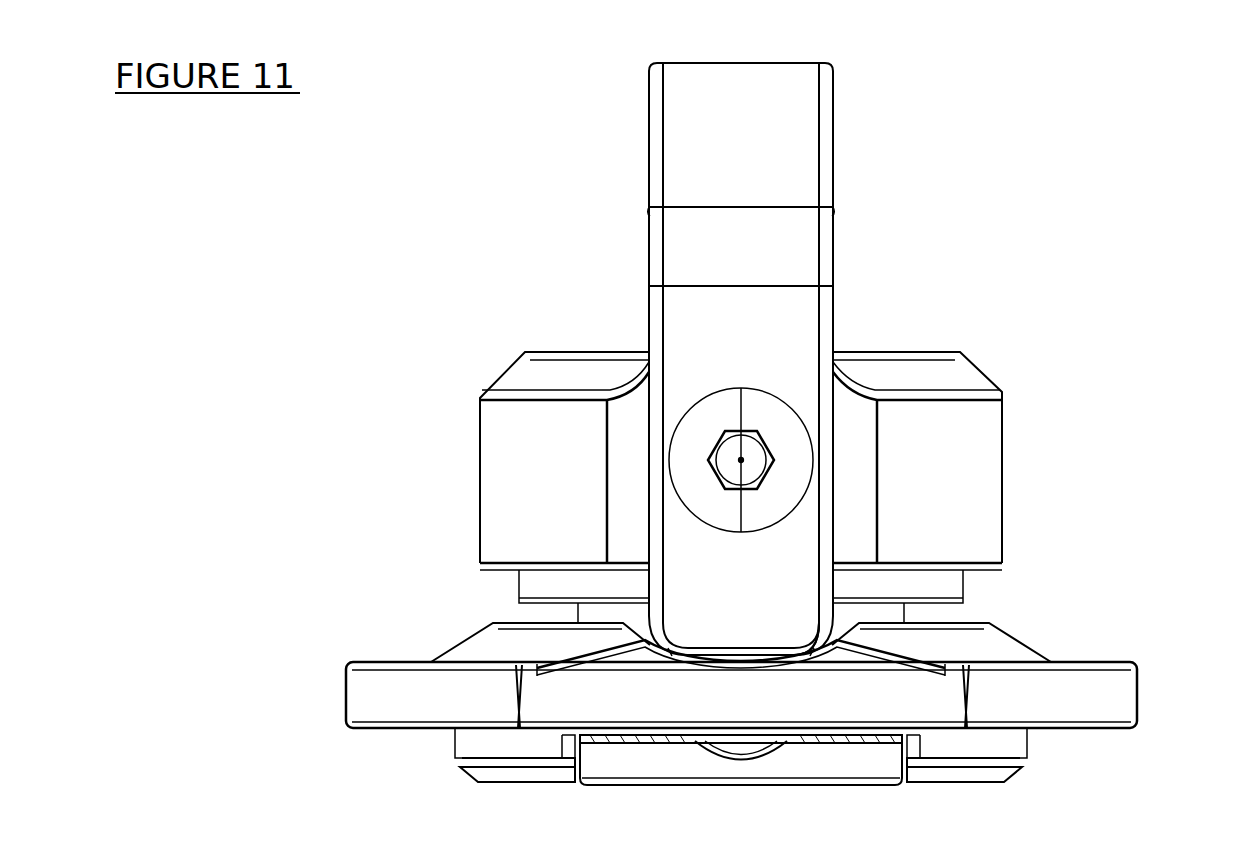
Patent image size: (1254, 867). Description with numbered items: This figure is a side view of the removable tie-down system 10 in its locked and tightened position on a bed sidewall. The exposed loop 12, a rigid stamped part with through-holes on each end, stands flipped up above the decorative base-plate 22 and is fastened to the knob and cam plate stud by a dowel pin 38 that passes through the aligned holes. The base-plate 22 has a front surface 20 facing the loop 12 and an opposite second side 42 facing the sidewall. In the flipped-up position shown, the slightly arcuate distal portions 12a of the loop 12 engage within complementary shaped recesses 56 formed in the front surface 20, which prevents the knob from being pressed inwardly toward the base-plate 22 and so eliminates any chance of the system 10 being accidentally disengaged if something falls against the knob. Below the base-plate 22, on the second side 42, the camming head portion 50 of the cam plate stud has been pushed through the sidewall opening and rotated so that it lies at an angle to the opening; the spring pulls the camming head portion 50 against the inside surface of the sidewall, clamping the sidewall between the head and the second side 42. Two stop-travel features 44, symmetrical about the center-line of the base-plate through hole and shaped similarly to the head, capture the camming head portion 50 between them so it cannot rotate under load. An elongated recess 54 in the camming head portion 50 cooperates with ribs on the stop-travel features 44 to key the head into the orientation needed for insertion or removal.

The tie-down system 10 is at (1098, 113).
The loop 12 is at (648, 82).
The distal portions 12a is at (775, 553).
The front surface 20 is at (432, 661).
The base-plate 22 is at (480, 463).
The dowel pin 38 is at (765, 405).
The second side 42 is at (1100, 695).
The stop-travel features 44 is at (465, 750).
The camming head portion 50 is at (627, 755).
The elongated recess 54 is at (755, 750).
The recesses 56 is at (714, 655).